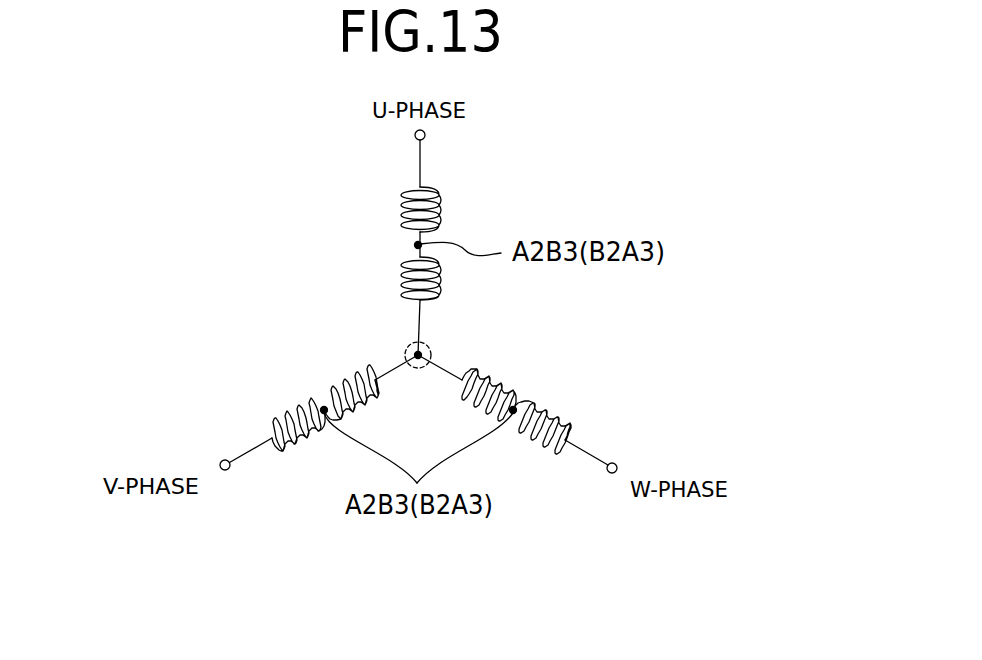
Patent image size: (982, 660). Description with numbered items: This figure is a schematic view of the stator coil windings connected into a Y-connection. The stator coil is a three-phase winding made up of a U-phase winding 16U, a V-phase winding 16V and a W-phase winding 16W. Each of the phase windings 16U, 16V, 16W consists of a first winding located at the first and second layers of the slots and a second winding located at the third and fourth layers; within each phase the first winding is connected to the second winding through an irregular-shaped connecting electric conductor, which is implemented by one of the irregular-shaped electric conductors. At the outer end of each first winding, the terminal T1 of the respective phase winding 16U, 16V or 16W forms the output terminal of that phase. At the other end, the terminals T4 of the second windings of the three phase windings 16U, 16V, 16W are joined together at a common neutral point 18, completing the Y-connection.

The U-phase winding 16U is at (292, 243).
The V-phase winding 16V is at (206, 400).
The W-phase winding 16W is at (647, 411).
The neutral point 18 is at (432, 348).
The terminal T1 is at (420, 315).
The terminal T4 is at (399, 340).